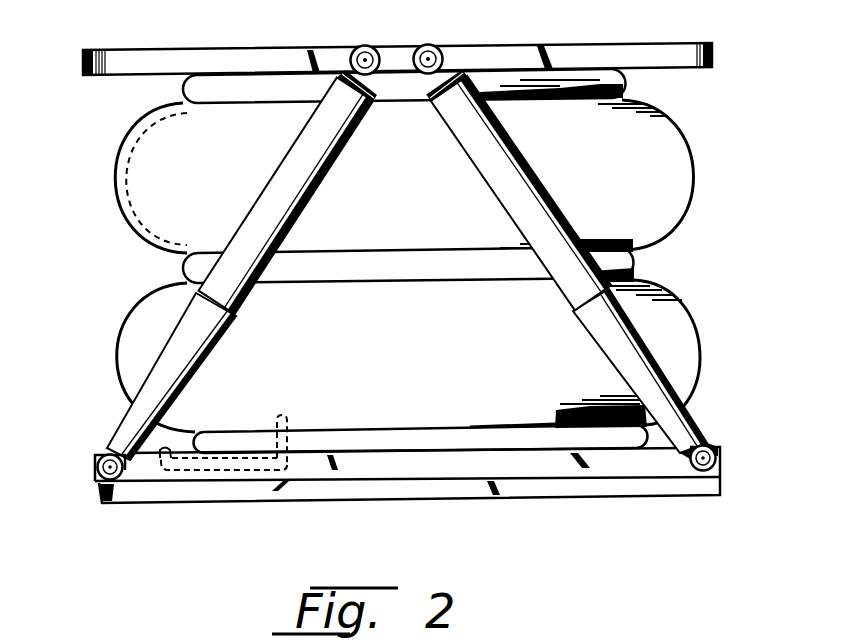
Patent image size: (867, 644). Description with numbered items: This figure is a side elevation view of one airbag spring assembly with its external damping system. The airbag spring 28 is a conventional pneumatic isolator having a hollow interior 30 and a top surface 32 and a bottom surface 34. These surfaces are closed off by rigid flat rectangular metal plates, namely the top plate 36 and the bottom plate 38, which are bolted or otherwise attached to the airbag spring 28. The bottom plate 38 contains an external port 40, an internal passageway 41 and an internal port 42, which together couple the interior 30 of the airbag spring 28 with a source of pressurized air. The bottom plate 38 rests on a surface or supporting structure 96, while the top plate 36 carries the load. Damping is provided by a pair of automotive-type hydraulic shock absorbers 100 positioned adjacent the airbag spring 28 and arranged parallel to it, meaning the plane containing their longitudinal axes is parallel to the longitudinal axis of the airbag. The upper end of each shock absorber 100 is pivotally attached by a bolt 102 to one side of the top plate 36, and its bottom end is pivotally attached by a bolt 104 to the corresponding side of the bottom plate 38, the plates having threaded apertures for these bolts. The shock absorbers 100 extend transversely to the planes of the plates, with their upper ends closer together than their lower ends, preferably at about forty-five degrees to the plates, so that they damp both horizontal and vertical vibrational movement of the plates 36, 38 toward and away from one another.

The airbag spring 28 is at (118, 206).
The hollow interior 30 is at (128, 160).
The top surface 32 is at (212, 80).
The bottom surface 34 is at (366, 458).
The top plate 36 is at (130, 50).
The bottom plate 38 is at (473, 466).
The external port 40 is at (160, 456).
The internal passageway 41 is at (230, 470).
The internal port 42 is at (284, 408).
The supporting structure 96 is at (387, 494).
The shock absorber 100 is at (186, 258).
The bolt 102 is at (426, 44).
The bolt 104 is at (112, 481).